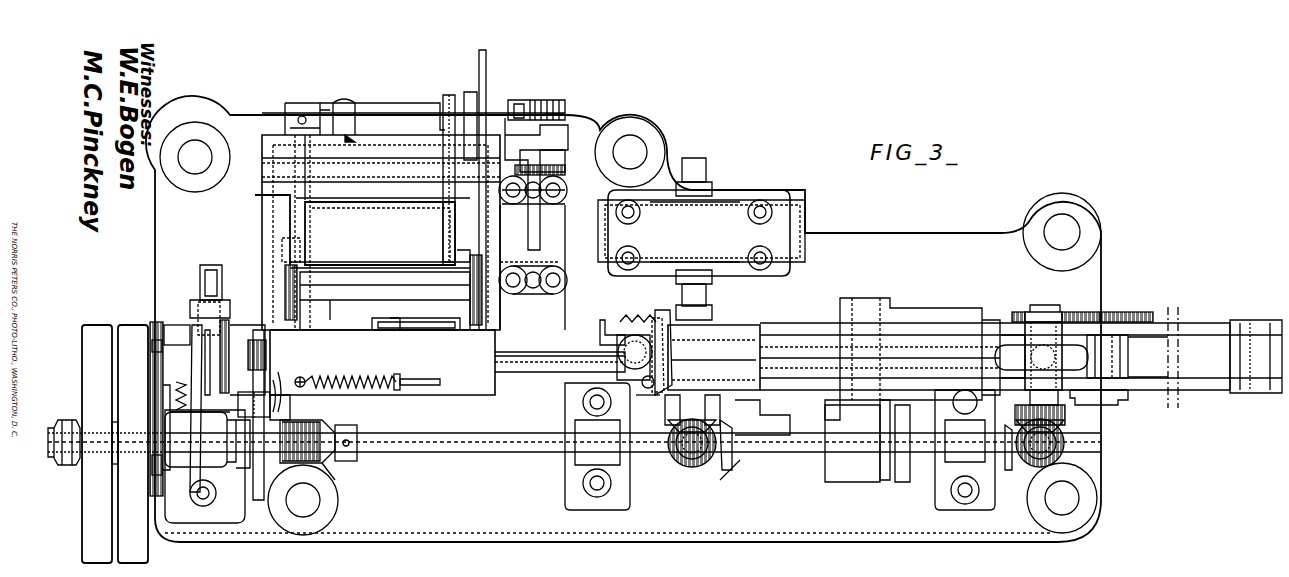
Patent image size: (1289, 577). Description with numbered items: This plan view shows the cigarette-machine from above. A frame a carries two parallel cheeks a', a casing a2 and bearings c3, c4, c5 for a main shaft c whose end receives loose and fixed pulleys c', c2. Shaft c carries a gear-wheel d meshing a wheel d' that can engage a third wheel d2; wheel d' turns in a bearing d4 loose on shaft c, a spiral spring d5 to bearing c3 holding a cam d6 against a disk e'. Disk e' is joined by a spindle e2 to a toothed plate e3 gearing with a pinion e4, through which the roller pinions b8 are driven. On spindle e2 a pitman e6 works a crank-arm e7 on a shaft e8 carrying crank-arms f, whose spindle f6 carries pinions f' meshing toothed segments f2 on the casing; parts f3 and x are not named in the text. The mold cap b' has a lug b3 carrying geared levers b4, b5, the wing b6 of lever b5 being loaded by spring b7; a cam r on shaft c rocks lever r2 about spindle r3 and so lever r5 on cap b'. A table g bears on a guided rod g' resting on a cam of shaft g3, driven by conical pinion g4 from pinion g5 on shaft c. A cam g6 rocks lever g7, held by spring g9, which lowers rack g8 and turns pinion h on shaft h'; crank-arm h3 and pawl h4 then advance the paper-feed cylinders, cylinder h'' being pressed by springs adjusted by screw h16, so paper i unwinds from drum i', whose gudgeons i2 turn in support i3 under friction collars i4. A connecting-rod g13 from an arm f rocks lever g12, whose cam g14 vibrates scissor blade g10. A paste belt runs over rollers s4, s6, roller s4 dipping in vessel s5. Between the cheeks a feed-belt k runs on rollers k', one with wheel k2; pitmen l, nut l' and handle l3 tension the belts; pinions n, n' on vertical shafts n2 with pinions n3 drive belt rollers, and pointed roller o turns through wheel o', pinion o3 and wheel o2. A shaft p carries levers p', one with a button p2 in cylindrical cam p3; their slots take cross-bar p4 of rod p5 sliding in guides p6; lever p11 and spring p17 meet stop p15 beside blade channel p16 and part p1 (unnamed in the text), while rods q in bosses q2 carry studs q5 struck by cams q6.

The frame a is at (623, 319).
The frame guide bar a' is at (989, 355).
The carriage a2 is at (262, 215).
The slide plate b' is at (382, 362).
The slide arm b3 is at (482, 393).
The spring b4 is at (352, 380).
The rod b5 is at (432, 382).
The collar b6 is at (410, 380).
The screw b7 is at (316, 380).
The pinion b8 is at (262, 348).
The main shaft c is at (574, 444).
The disk c' is at (97, 444).
The disk c2 is at (130, 444).
The collar c3 is at (177, 342).
The bearing c4 is at (570, 458).
The bearing c5 is at (965, 450).
The gear wheel d is at (141, 413).
The gear hub d' is at (141, 468).
The gear rim d2 is at (158, 345).
The hub d4 is at (200, 439).
The arm d5 is at (160, 400).
The nut d6 is at (194, 492).
The lever e' is at (187, 408).
The pawl e2 is at (205, 333).
The rack e3 is at (228, 320).
The lever arm e4 is at (222, 352).
The block e6 is at (200, 270).
The pin e7 is at (211, 282).
The stop e8 is at (352, 303).
The slide f is at (385, 286).
The guide f' is at (380, 256).
The slide lower part f2 is at (385, 313).
The rack f3 is at (389, 290).
The slide bar f6 is at (385, 275).
The plate g is at (380, 233).
The stud g' is at (261, 245).
The arm g3 is at (280, 194).
The bevel gear g4 is at (318, 441).
The bevel pinion g5 is at (330, 476).
The bracket g6 is at (318, 103).
The bar g7 is at (385, 104).
The bearing block g8 is at (524, 112).
The guide g9 is at (432, 233).
The guide piece g10 is at (450, 252).
The rod g12 is at (470, 100).
The rod g13 is at (486, 90).
The rod g14 is at (447, 100).
The shaft h is at (537, 163).
The collar h' is at (567, 113).
The arm h3 is at (562, 165).
The pinion h4 is at (560, 172).
The link h16 is at (566, 292).
The bracket h'' is at (532, 267).
The clamp plate i is at (701, 233).
The bolt i' is at (694, 233).
The nut i2 is at (705, 188).
The plate i3 is at (770, 190).
The block i4 is at (700, 170).
The sleeve k is at (1148, 357).
The shaft end k' is at (1231, 356).
The pin k2 is at (1150, 318).
The block l is at (1043, 336).
The pin l' is at (1044, 362).
The slot l3 is at (1041, 356).
The bevel gear n is at (863, 436).
The bevel gear n' is at (883, 461).
The gear n2 is at (700, 455).
The bracket n3 is at (724, 470).
The sleeve o is at (1099, 370).
The gear o' is at (1126, 300).
The pinion o2 is at (1018, 312).
The gear o3 is at (1075, 312).
The rod p is at (880, 360).
The block p' is at (911, 351).
The rod p1 is at (560, 356).
The arm p2 is at (880, 412).
The block p3 is at (867, 443).
The rod end p4 is at (973, 357).
The rod p5 is at (880, 355).
The sleeve p6 is at (714, 360).
The block p11 is at (660, 352).
The clamp p15 is at (625, 328).
The rod p16 is at (528, 360).
The spring p17 is at (630, 318).
The lever q is at (656, 359).
The pivot q2 is at (641, 403).
The arm q5 is at (666, 336).
The block q6 is at (708, 312).
The lever r is at (262, 500).
The collar r2 is at (252, 418).
The arm r3 is at (236, 470).
The spring r5 is at (285, 385).
The plate s4 is at (436, 320).
The pin s5 is at (397, 330).
The plate s6 is at (388, 318).
The window x is at (383, 229).